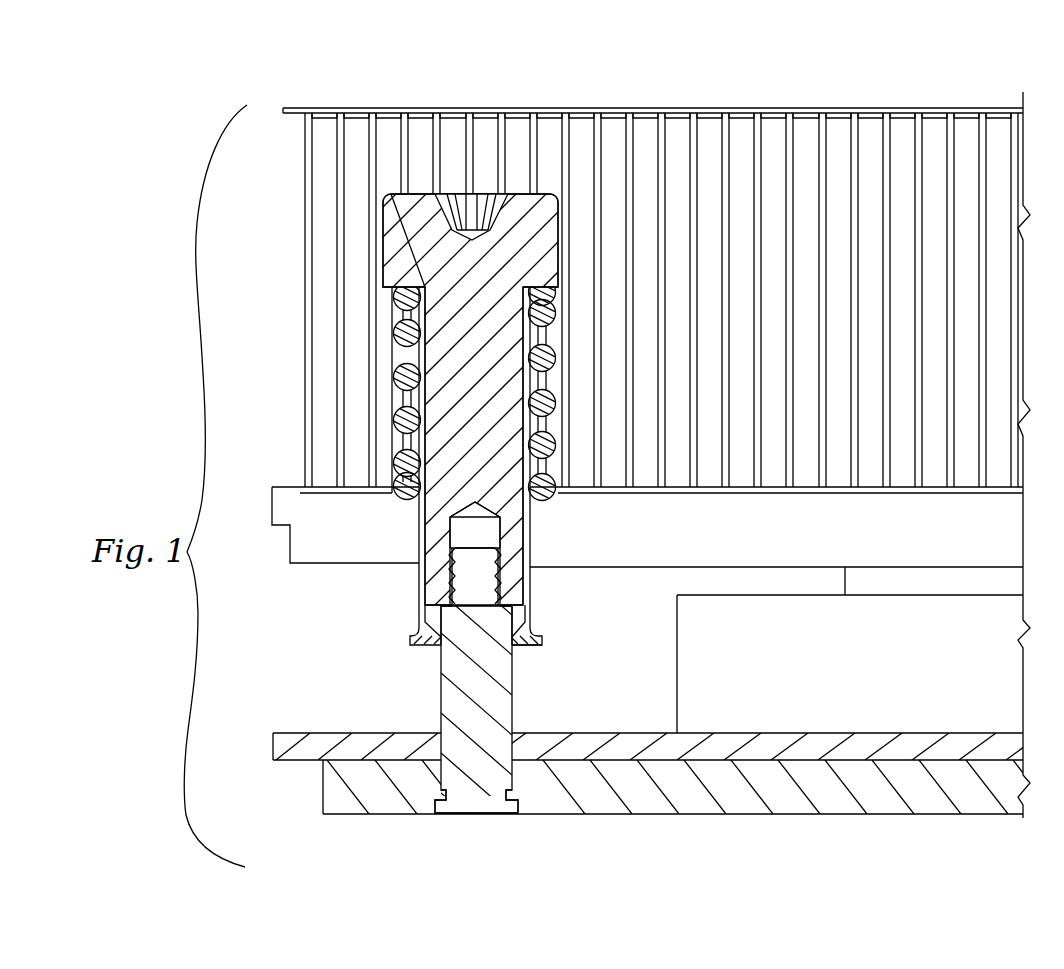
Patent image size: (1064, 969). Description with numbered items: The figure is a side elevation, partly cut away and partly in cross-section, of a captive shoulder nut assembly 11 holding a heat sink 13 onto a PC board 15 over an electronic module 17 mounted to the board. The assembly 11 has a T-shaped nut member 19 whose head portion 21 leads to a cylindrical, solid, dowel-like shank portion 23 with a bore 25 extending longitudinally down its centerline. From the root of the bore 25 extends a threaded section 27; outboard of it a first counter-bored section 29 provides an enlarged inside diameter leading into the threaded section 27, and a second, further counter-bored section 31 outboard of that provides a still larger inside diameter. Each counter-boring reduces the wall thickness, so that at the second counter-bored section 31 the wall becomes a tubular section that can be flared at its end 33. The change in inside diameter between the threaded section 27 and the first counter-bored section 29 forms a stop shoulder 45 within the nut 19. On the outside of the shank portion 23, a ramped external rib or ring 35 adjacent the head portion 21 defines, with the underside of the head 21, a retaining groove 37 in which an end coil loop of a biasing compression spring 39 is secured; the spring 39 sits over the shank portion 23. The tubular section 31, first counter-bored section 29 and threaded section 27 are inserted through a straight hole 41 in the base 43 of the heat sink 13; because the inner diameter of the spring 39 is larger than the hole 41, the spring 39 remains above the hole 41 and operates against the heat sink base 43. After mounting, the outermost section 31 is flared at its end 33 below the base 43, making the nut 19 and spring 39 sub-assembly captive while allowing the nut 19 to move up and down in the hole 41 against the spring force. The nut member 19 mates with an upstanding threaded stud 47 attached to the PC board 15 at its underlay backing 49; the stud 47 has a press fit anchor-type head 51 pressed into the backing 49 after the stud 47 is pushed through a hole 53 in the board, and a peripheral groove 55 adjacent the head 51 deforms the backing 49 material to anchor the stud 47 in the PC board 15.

The captive shoulder nut assembly 11 is at (372, 676).
The heat sink 13 is at (285, 490).
The PC board 15 is at (281, 800).
The electronic module 17 is at (803, 676).
The nut member 19 is at (588, 212).
The head portion 21 is at (408, 212).
The shank portion 23 is at (488, 394).
The bore 25 is at (483, 533).
The threaded section 27 is at (500, 575).
The first counter-bored section 29 is at (443, 620).
The second counter-bored section 31 is at (523, 650).
The flared end 33 is at (540, 641).
The external rib or ring 35 is at (556, 328).
The retaining groove 37 is at (548, 299).
The biasing compression spring 39 is at (555, 404).
The straight hole 41 is at (419, 533).
The heat sink base 43 is at (755, 539).
The stop shoulder 45 is at (443, 604).
The threaded stud 47 is at (540, 711).
The underlay backing 49 is at (575, 795).
The press fit anchor-type head 51 is at (467, 800).
The hole 53 is at (438, 778).
The peripheral groove 55 is at (530, 798).